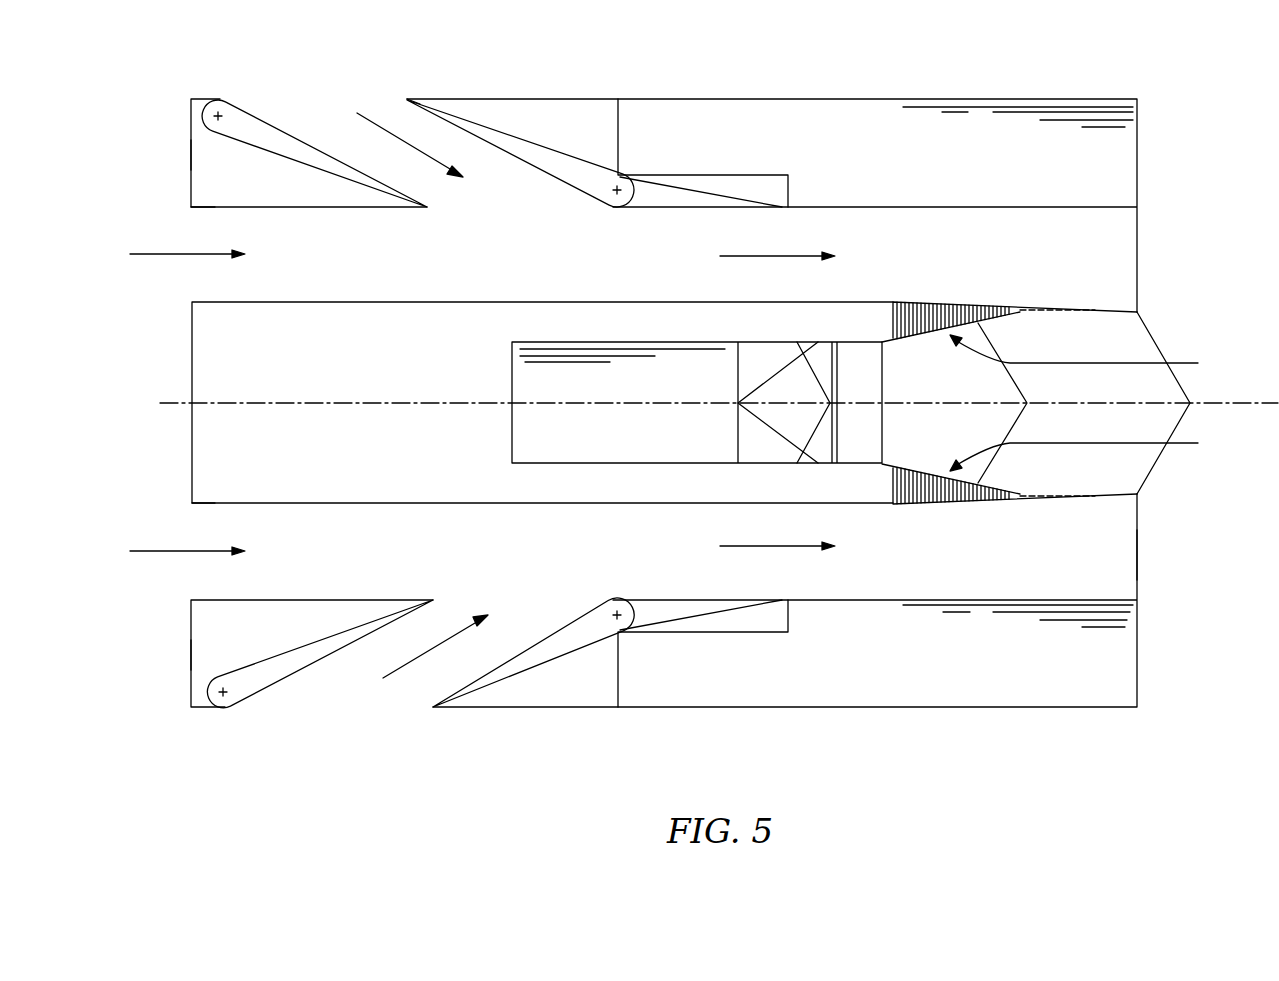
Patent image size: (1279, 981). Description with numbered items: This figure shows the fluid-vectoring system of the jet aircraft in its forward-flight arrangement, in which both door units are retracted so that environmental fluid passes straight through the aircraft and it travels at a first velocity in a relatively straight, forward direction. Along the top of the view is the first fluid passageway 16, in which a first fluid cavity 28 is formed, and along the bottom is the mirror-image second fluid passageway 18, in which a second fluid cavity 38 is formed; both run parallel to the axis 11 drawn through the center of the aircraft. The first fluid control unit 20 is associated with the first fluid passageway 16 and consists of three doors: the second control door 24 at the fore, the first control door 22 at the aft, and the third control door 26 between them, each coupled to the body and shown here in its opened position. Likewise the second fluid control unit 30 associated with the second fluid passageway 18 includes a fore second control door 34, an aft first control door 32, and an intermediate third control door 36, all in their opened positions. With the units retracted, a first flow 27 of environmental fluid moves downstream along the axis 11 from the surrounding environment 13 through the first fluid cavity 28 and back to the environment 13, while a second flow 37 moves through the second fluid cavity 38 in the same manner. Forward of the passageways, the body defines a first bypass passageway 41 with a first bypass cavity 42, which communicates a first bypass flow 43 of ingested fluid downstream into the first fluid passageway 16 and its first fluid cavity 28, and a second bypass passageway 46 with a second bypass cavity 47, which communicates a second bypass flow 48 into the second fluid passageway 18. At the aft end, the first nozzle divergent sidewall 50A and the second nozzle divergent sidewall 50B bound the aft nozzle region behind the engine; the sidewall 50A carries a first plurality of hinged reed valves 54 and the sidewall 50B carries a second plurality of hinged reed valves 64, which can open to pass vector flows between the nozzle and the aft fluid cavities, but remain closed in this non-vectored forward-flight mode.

The axis 11 is at (296, 402).
The environment 13 is at (154, 88).
The first fluid passageway 16 is at (982, 205).
The second fluid passageway 18 is at (918, 600).
The first fluid control unit 20 is at (445, 93).
The first control door 22 is at (653, 193).
The second control door 24 is at (233, 118).
The third control door 26 is at (493, 137).
The first flow 27 is at (390, 132).
The first fluid cavity 28 is at (838, 227).
The second fluid control unit 30 is at (623, 638).
The first control door 32 is at (722, 622).
The second control door 34 is at (265, 675).
The third control door 36 is at (540, 652).
The second flow 37 is at (433, 652).
The second fluid cavity 38 is at (1123, 557).
The first bypass passageway 41 is at (232, 205).
The first bypass cavity 42 is at (212, 223).
The first bypass flow 43 is at (173, 254).
The second bypass passageway 46 is at (232, 600).
The second bypass cavity 47 is at (212, 523).
The second bypass flow 48 is at (185, 552).
The first nozzle divergent sidewall 50A is at (1098, 355).
The second nozzle divergent sidewall 50B is at (1098, 451).
The first plurality of hinged reed valves 54 is at (910, 327).
The second plurality of hinged reed valves 64 is at (903, 480).